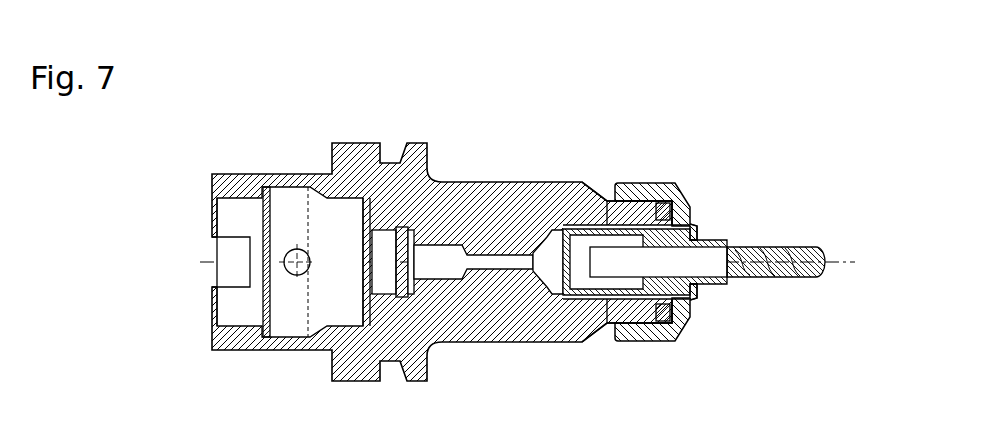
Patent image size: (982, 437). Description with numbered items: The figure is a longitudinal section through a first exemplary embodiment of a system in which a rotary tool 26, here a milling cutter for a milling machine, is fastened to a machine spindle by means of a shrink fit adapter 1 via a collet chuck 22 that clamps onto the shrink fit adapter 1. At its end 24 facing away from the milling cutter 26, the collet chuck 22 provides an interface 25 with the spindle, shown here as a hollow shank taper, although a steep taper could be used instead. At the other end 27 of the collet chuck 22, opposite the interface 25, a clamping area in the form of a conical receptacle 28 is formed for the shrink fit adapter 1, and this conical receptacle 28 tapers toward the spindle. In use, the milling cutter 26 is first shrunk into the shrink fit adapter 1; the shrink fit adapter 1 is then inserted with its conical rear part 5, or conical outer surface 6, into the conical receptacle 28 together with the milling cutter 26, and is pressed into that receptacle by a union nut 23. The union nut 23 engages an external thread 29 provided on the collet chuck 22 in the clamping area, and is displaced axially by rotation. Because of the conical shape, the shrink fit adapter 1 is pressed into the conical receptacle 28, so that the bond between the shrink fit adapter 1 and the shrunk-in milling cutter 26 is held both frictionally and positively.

The shrink fit adapter 1 is at (690, 227).
The conical rear part 5 is at (608, 200).
The conical outer surface 6 is at (564, 302).
The collet chuck 22 is at (458, 203).
The union nut 23 is at (684, 327).
The end facing away from the rotary tool 24 is at (237, 190).
The interface 25 is at (300, 188).
The rotary tool 26 is at (738, 251).
The other end 27 is at (634, 340).
The conical receptacle 28 is at (658, 215).
The external thread 29 is at (633, 192).